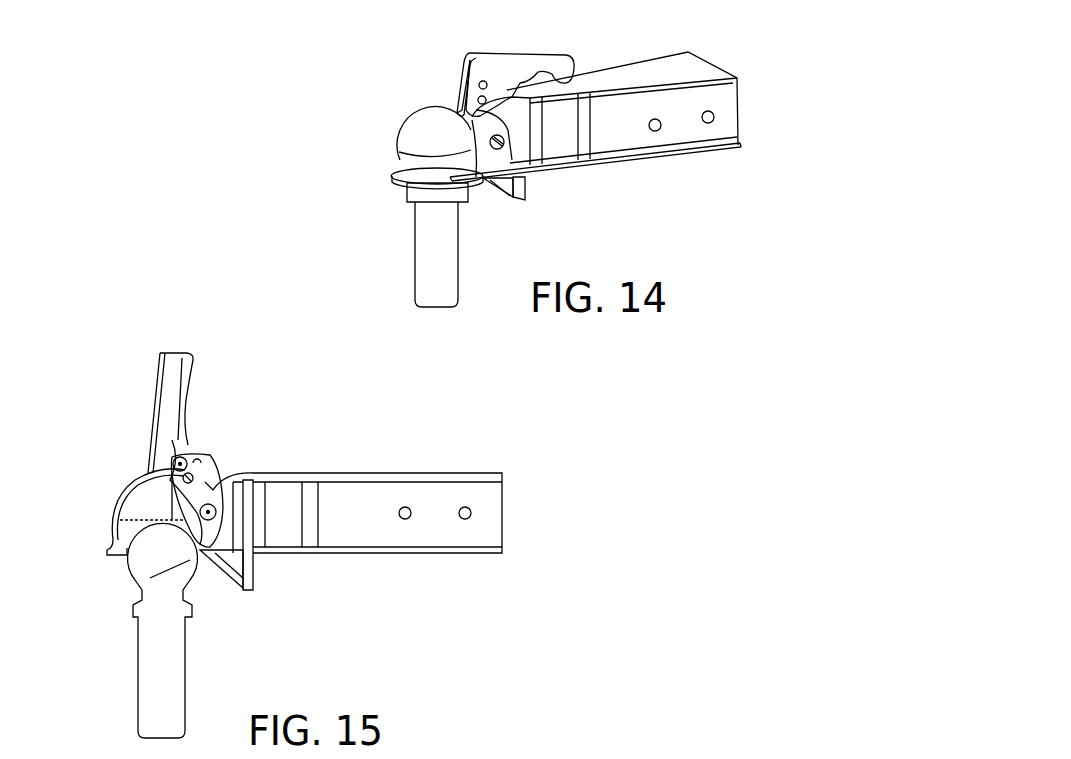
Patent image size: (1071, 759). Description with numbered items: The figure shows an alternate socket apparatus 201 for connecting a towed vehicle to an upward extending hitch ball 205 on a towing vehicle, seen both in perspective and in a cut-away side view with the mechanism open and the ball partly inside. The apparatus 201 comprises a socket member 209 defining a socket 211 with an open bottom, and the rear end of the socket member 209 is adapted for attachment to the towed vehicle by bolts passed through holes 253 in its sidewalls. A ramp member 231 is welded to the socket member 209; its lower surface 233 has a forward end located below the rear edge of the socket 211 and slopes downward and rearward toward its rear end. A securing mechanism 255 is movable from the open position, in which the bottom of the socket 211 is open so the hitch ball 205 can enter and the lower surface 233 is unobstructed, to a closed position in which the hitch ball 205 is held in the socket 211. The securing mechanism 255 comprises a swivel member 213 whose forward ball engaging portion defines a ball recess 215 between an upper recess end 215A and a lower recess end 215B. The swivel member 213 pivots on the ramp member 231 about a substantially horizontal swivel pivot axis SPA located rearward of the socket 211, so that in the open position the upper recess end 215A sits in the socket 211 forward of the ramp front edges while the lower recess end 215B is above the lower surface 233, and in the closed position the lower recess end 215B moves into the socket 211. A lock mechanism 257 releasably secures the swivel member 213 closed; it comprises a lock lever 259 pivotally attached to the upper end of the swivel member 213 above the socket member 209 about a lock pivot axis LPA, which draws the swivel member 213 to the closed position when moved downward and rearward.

In FIG. 14, the socket apparatus 201 is at (376, 133).
In FIG. 15, the hitch ball 205 is at (125, 572).
In FIG. 14, the socket member 209 is at (735, 147).
In FIG. 15, the socket member 209 is at (418, 473).
In FIG. 15, the socket 211 is at (135, 498).
In FIG. 15, the swivel member 213 is at (253, 527).
In FIG. 15, the ball recess 215 is at (140, 583).
In FIG. 15, the upper recess end 215A is at (172, 502).
In FIG. 15, the lower recess end 215B is at (200, 547).
In FIG. 14, the ramp member 231 is at (527, 189).
In FIG. 15, the ramp member 231 is at (255, 572).
In FIG. 14, the lower surface 233 is at (498, 194).
In FIG. 15, the lower surface 233 is at (224, 577).
In FIG. 14, the holes 253 is at (714, 117).
In FIG. 14, the securing mechanism 255 is at (452, 74).
In FIG. 15, the securing mechanism 255 is at (212, 433).
In FIG. 14, the lock mechanism 257 is at (448, 92).
In FIG. 14, the lock lever 259 is at (566, 56).
In FIG. 15, the lock pivot axis LPA is at (181, 457).
In FIG. 15, the swivel pivot axis SPA is at (208, 504).